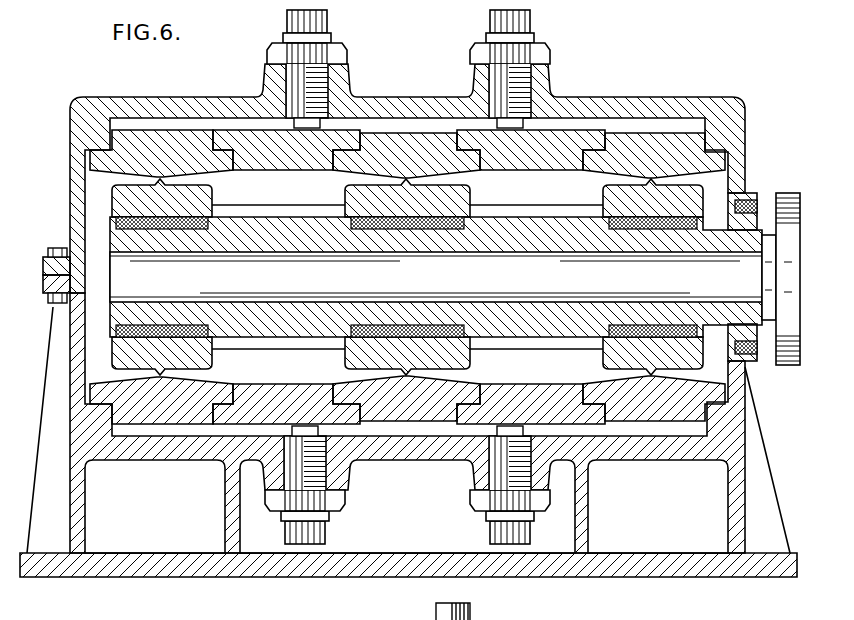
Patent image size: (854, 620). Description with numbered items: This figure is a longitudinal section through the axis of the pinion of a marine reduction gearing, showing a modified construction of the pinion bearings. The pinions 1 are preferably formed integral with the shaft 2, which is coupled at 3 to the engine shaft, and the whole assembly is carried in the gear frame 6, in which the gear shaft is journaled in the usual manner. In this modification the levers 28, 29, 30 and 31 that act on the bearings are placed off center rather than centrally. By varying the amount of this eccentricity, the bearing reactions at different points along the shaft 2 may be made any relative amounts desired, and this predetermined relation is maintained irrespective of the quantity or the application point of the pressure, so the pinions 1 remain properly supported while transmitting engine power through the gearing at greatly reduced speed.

The pinion 1 is at (528, 357).
The shaft 2 is at (436, 277).
The coupling 3 is at (787, 363).
The gear frame 6 is at (330, 565).
The lever 28 is at (237, 410).
The lever 29 is at (485, 408).
The lever 30 is at (250, 140).
The lever 31 is at (553, 148).